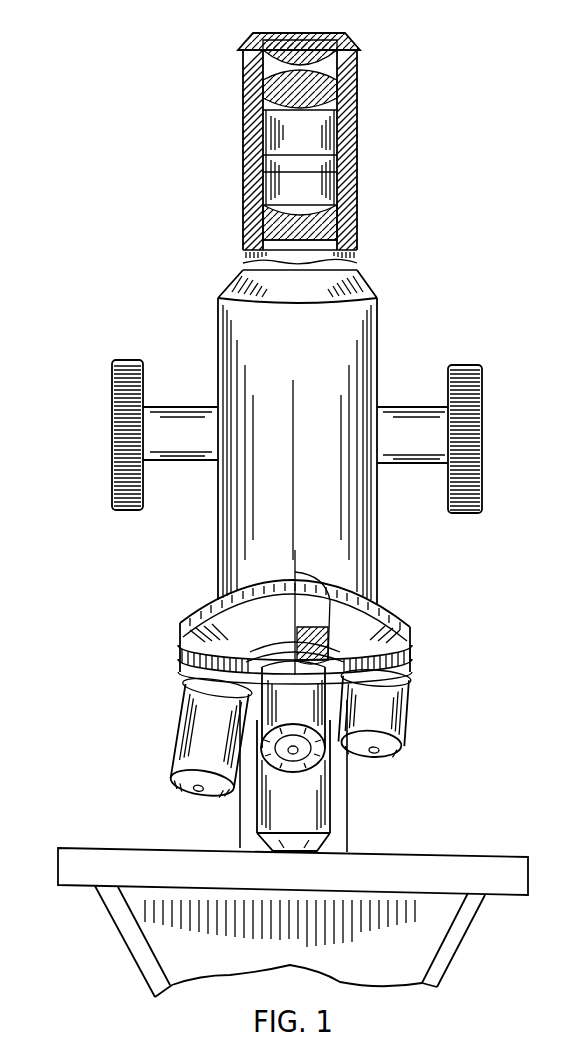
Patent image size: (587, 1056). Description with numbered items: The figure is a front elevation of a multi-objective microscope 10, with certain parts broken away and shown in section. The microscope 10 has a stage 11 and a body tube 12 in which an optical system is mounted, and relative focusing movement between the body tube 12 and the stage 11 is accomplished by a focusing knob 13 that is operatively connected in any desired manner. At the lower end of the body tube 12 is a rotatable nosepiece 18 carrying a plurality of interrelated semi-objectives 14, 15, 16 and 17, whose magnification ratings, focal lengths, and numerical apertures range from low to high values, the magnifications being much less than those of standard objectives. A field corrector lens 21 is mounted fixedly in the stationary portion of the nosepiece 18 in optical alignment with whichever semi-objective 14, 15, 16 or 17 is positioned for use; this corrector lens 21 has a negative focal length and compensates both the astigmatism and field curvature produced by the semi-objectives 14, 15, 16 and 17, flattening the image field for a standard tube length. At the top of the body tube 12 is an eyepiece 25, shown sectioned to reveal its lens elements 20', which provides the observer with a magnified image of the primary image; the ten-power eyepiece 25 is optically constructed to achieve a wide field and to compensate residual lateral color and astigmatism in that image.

The microscope 10 is at (122, 590).
The stage 11 is at (472, 856).
The body tube 12 is at (370, 331).
The focusing knob 13 is at (453, 366).
The semi-objective 14 is at (390, 719).
The semi-objective 15 is at (305, 711).
The semi-objective 16 is at (218, 741).
The semi-objective 17 is at (305, 813).
The rotatable nosepiece 18 is at (416, 648).
The eyepiece lens system 20' is at (336, 140).
The field corrector lens 21 is at (303, 628).
The eyepiece 25 is at (357, 37).